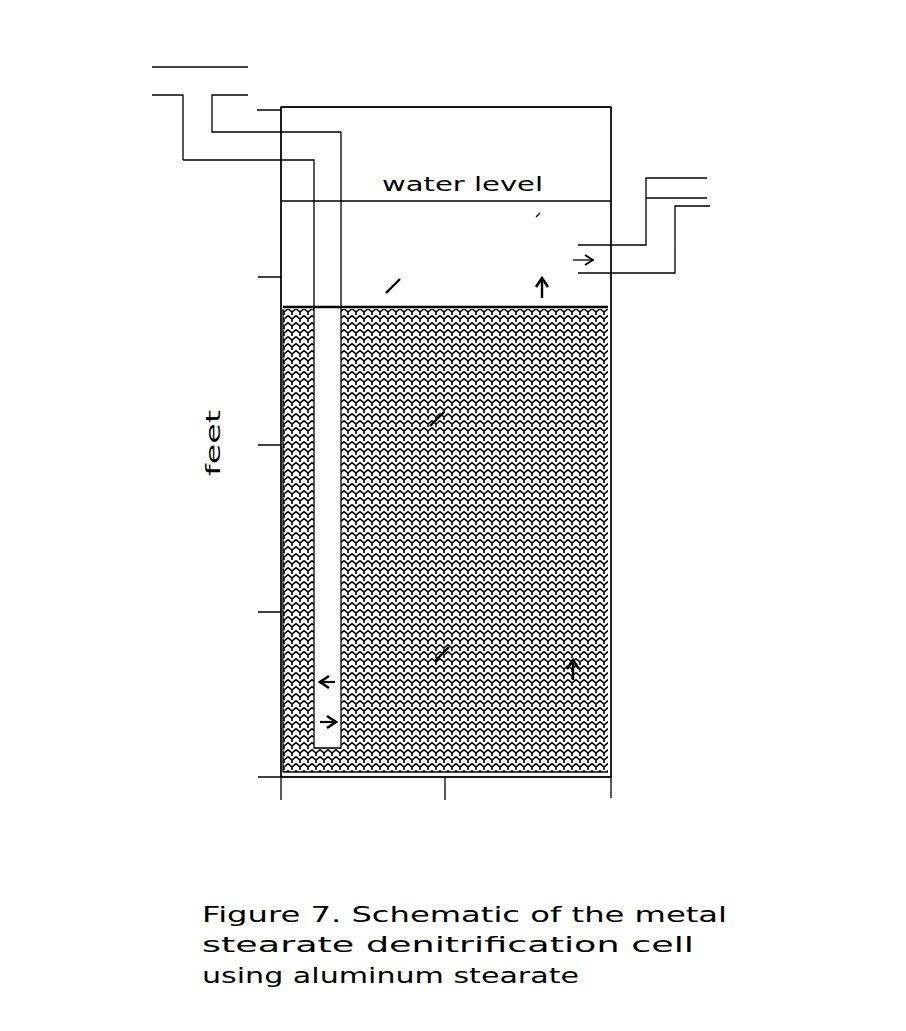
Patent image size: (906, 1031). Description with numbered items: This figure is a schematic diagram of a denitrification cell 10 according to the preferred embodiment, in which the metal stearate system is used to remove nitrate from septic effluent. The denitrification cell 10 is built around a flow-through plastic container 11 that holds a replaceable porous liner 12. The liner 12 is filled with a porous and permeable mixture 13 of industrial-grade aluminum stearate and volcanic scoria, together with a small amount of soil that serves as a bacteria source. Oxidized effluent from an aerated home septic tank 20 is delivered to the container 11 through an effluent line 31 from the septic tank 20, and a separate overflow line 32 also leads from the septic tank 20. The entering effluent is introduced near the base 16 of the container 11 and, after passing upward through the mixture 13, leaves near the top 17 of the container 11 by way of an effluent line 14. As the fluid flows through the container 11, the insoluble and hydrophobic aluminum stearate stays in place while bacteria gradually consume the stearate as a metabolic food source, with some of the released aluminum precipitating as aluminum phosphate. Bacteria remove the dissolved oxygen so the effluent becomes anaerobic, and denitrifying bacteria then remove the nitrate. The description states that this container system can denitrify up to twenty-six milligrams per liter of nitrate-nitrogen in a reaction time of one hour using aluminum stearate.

The denitrification cell 10 is at (504, 532).
The flow-through plastic container 11 is at (278, 525).
The liner 12 is at (279, 571).
The permeable mixture 13 is at (532, 539).
The effluent line 14 is at (721, 190).
The base of container 16 is at (434, 813).
The top of container 17 is at (446, 92).
The septic tank 20 is at (188, 82).
The effluent line from septic tank 31 is at (313, 145).
The overflow line from septic tank 32 is at (280, 85).